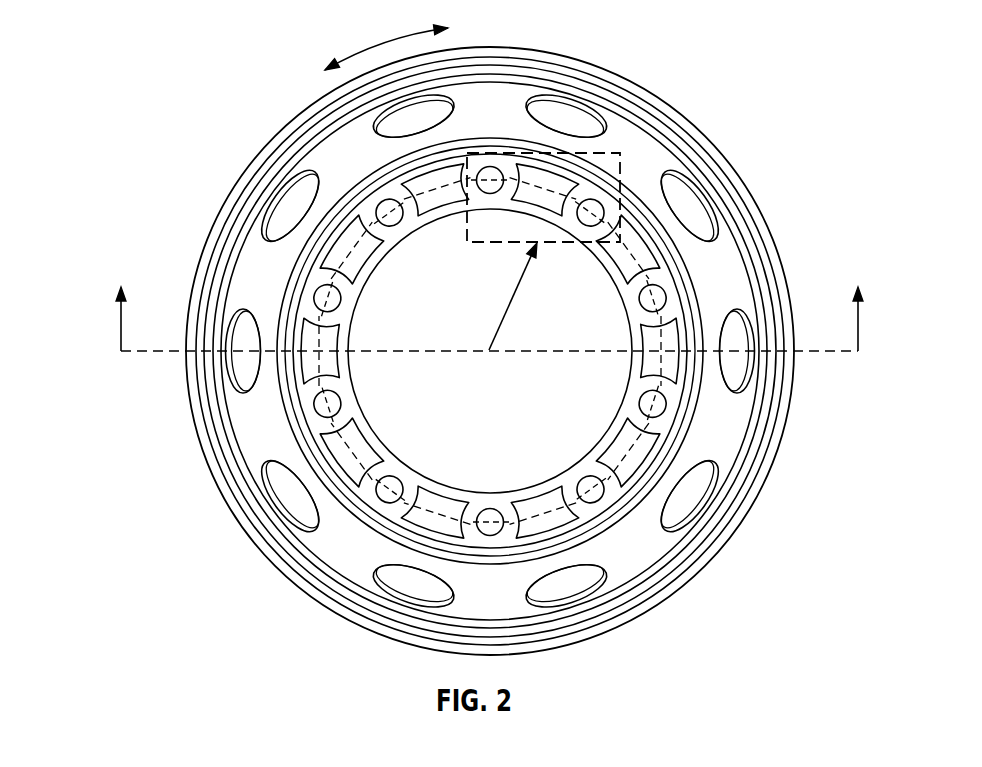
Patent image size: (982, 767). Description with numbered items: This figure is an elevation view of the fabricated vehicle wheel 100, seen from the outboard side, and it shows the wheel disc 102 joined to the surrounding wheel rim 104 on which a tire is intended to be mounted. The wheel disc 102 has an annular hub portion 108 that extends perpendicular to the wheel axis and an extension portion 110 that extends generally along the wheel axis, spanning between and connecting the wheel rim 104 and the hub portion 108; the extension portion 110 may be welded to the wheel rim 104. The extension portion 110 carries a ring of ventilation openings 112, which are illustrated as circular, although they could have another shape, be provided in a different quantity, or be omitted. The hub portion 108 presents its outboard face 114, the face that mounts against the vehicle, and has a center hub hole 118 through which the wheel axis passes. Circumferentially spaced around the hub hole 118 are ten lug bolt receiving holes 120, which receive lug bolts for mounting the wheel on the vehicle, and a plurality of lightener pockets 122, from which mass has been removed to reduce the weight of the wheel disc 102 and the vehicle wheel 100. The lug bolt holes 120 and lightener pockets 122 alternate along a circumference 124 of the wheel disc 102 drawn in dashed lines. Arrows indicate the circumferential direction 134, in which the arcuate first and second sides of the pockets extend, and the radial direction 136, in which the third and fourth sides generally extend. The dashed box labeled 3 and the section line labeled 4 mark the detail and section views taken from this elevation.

The fabricated vehicle wheel 100 is at (256, 74).
The wheel disc 102 is at (722, 266).
The wheel rim 104 is at (716, 148).
The hub portion 108 is at (355, 297).
The extension portion 110 is at (737, 413).
The ventilation openings 112 is at (693, 483).
The outboard face 114 is at (588, 515).
The center hub hole 118 is at (506, 391).
The lug bolt receiving holes 120 is at (383, 498).
The lightener pockets 122 is at (522, 195).
The circumference 124 is at (348, 448).
The circumferential direction 134 is at (390, 43).
The radial direction 136 is at (517, 300).
The detail view 3 region 3 is at (573, 155).
The section line 4- 4 is at (128, 283).